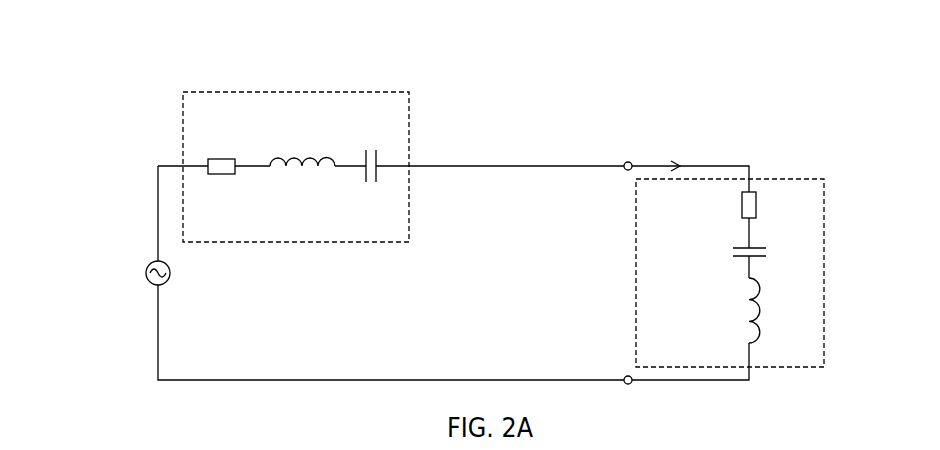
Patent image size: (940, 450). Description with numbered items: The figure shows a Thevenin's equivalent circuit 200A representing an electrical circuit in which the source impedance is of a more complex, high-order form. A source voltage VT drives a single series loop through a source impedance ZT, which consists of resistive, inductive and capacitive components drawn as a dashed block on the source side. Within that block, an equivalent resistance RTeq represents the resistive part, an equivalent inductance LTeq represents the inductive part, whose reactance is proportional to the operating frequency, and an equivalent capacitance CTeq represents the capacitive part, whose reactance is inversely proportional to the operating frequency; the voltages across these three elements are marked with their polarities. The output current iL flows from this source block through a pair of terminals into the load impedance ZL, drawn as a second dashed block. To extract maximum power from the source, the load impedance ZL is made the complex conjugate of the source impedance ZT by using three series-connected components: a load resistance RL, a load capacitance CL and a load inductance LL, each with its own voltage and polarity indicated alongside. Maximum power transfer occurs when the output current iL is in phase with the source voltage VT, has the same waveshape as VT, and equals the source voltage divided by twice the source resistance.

The Thevenin's equivalent circuit 200A is at (504, 209).
The source voltage VT is at (143, 273).
The source impedance ZT is at (296, 151).
The equivalent resistance RTeq is at (219, 148).
The equivalent inductance LTeq is at (302, 144).
The equivalent capacitance CTeq is at (366, 152).
The load impedance ZL is at (745, 273).
The load resistance RL is at (769, 205).
The load capacitance CL is at (765, 253).
The load inductance LL is at (772, 310).
The output current iL is at (676, 154).